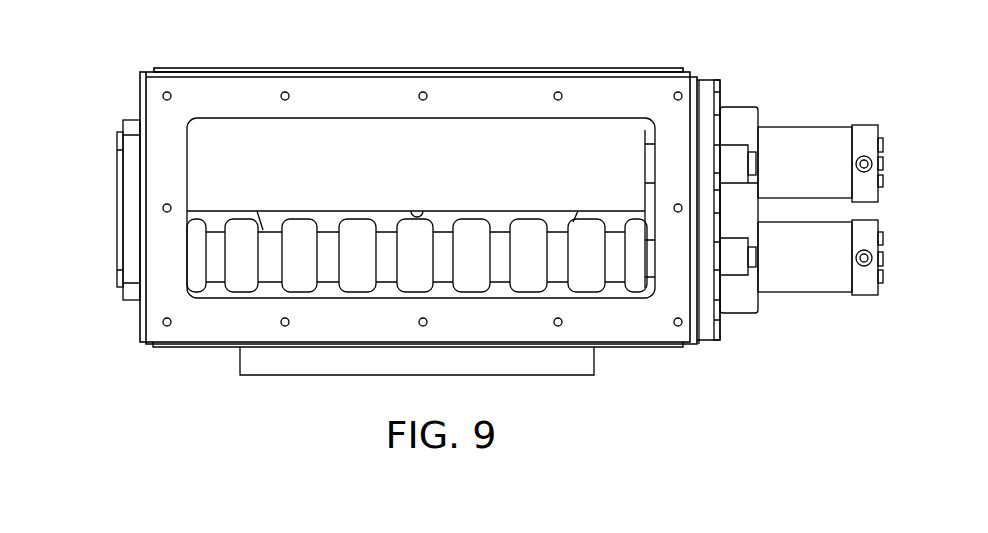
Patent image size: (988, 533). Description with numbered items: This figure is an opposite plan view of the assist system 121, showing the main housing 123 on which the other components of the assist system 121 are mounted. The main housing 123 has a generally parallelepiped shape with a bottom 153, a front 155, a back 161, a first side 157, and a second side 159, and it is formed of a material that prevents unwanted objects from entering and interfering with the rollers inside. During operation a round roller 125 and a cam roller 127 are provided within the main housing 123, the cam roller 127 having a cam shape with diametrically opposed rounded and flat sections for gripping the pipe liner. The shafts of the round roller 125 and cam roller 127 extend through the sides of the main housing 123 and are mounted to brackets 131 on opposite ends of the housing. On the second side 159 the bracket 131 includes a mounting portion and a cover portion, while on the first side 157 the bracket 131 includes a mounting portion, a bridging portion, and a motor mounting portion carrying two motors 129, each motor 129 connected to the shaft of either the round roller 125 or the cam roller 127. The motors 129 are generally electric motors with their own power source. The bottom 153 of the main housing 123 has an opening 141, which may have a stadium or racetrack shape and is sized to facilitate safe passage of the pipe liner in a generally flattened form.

The assist system 121 is at (153, 45).
The main housing 123 is at (160, 343).
The round roller 125 is at (499, 293).
The cam roller 127 is at (380, 115).
The motor 129 is at (893, 224).
The bracket 131 is at (110, 195).
The opening 141 is at (280, 294).
The bottom 153 is at (651, 306).
The front 155 is at (594, 72).
The first side 157 is at (718, 354).
The second side 159 is at (130, 108).
The back 161 is at (634, 353).